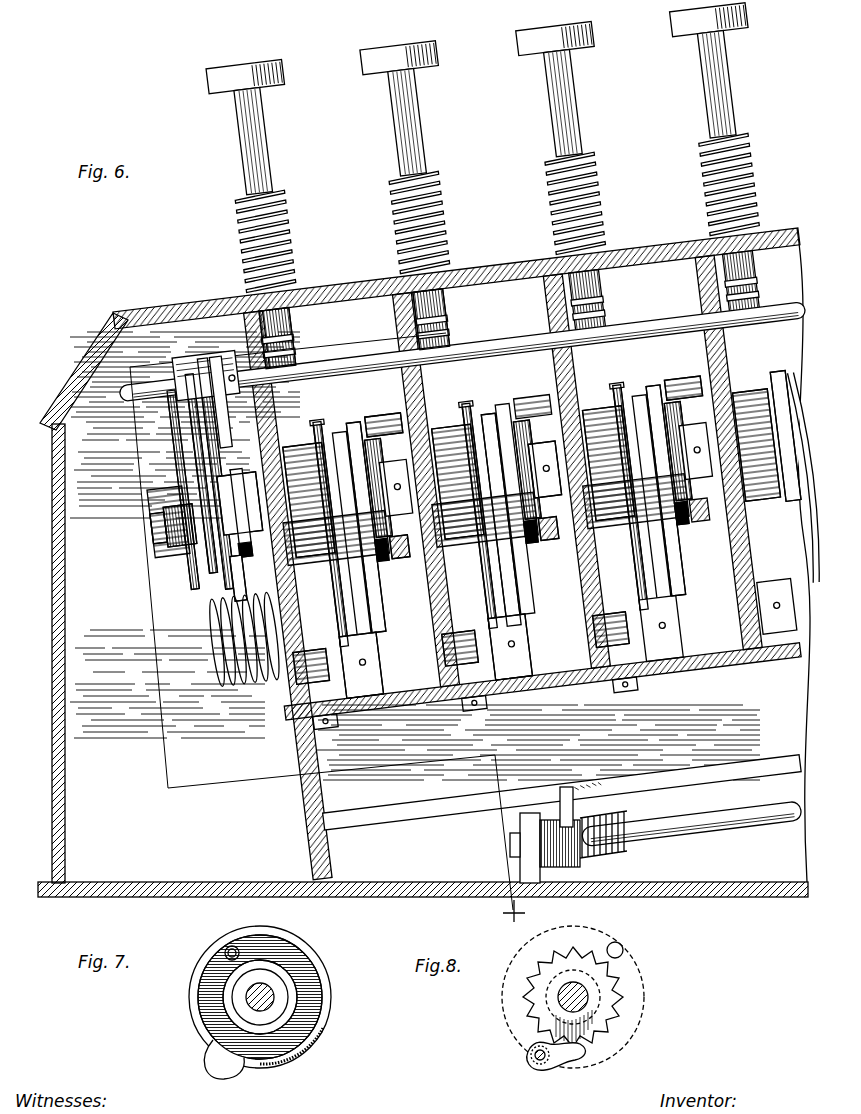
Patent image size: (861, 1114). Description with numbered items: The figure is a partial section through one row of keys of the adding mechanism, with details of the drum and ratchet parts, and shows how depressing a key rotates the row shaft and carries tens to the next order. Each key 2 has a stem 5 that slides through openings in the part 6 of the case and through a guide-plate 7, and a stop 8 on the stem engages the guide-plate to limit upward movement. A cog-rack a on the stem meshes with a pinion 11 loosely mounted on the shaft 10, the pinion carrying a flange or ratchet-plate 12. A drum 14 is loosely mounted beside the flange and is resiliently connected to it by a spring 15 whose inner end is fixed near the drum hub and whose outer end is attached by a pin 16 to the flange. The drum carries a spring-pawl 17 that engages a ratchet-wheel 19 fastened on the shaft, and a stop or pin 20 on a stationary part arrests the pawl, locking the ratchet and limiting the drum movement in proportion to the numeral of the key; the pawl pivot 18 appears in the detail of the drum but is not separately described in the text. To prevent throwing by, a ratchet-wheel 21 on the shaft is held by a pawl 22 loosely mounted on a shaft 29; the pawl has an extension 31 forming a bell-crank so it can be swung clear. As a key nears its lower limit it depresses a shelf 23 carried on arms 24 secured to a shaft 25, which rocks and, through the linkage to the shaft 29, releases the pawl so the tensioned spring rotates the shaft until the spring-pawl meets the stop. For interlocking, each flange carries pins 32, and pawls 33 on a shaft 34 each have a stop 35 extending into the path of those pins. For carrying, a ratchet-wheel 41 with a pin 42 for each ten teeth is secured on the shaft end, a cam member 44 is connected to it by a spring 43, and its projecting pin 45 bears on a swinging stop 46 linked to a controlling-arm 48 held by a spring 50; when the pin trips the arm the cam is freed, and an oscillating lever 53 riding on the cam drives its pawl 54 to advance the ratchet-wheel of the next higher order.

In FIG. 6, the key 2 is at (518, 47).
In FIG. 6, the stem 5 is at (395, 179).
In FIG. 8, the stem 5 is at (514, 920).
In FIG. 6, the part of the case 6 is at (333, 285).
In FIG. 6, the guide-plate 7 is at (520, 698).
In FIG. 6, the stop 8 is at (516, 388).
In FIG. 6, the shaft 10 is at (175, 520).
In FIG. 7, the shaft 10 is at (275, 1000).
In FIG. 8, the shaft 10 is at (588, 996).
In FIG. 6, the pinion 11 is at (600, 405).
In FIG. 6, the flange or ratchet-plate 12 is at (322, 432).
In FIG. 6, the drum 14 is at (797, 420).
In FIG. 7, the drum 14 is at (318, 1050).
In FIG. 8, the drum 14 is at (612, 1068).
In FIG. 7, the spring 15 is at (300, 968).
In FIG. 6, the pin 16 is at (330, 470).
In FIG. 7, the pin 16 is at (230, 947).
In FIG. 6, the spring-pawl 17 is at (528, 548).
In FIG. 8, the spring-pawl 17 is at (551, 1072).
In FIG. 6, the pivot pin 18 is at (385, 560).
In FIG. 8, the pivot pin 18 is at (532, 1060).
In FIG. 6, the ratchet-wheel 19 is at (378, 470).
In FIG. 8, the ratchet-wheel 19 is at (600, 1004).
In FIG. 6, the stop or pin 20 is at (372, 425).
In FIG. 8, the stop or pin 20 is at (622, 948).
In FIG. 6, the ratchet-wheel 21 is at (238, 578).
In FIG. 6, the pawl 22 is at (222, 462).
In FIG. 6, the shelf 23 is at (712, 770).
In FIG. 6, the arms 24 is at (575, 862).
In FIG. 6, the shaft 25 is at (732, 822).
In FIG. 6, the shaft 29 is at (342, 360).
In FIG. 6, the extension 31 is at (250, 392).
In FIG. 6, the pins 32 is at (393, 610).
In FIG. 6, the pawls 33 is at (505, 600).
In FIG. 6, the shaft 34 is at (390, 652).
In FIG. 6, the stop 35 is at (505, 555).
In FIG. 6, the ratchet-wheel 41 is at (228, 576).
In FIG. 6, the pin 42 is at (235, 530).
In FIG. 6, the spring 43 is at (170, 545).
In FIG. 6, the cam 44 is at (178, 490).
In FIG. 6, the projecting pin 45 is at (160, 512).
In FIG. 6, the swinging stop 46 is at (180, 450).
In FIG. 6, the controlling-arm 48 is at (225, 482).
In FIG. 6, the spring 50 is at (170, 380).
In FIG. 6, the oscillating lever 53 is at (205, 605).
In FIG. 6, the pawl 54 is at (180, 432).
In FIG. 6, the cog-rack a is at (296, 352).